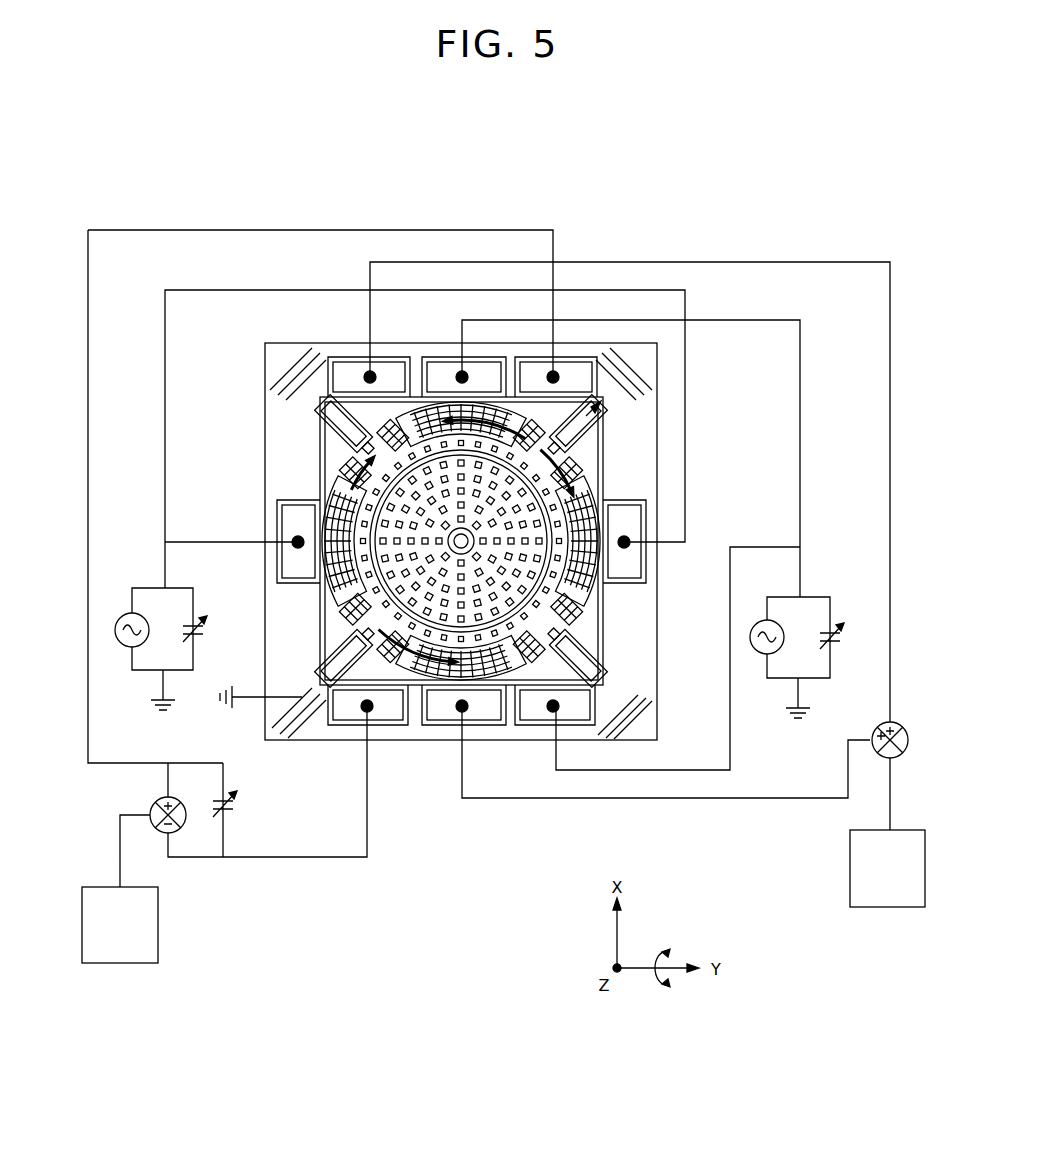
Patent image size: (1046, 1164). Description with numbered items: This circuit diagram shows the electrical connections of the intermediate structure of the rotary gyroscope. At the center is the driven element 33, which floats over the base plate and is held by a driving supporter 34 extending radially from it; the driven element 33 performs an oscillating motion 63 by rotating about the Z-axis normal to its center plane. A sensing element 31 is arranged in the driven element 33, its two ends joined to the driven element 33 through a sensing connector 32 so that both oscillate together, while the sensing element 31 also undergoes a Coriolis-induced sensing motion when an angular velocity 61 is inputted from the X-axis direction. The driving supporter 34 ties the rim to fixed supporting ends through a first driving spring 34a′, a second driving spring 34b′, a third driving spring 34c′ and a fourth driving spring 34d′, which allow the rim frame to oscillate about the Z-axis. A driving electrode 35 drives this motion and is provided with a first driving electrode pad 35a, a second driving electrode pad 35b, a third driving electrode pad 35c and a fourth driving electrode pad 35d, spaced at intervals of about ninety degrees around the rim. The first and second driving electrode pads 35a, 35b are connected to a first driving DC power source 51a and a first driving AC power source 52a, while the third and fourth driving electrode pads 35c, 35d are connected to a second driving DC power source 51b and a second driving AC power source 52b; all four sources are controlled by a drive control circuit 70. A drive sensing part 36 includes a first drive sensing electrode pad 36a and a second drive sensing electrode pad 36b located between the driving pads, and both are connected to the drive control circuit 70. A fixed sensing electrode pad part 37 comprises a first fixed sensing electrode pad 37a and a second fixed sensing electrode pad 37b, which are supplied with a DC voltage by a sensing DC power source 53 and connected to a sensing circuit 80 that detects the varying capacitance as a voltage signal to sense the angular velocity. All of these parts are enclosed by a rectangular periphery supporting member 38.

The sensing element 31 is at (560, 450).
The sensing connector 32 is at (620, 505).
The driven element 33 is at (633, 567).
The driving supporter 34 is at (594, 404).
The first driving spring 34a′ is at (328, 427).
The second driving spring 34b′ is at (587, 440).
The third driving spring 34c′ is at (330, 652).
The fourth driving spring 34d′ is at (605, 662).
The driving electrode 35 is at (433, 360).
The first driving electrode pad 35a is at (482, 375).
The second driving electrode pad 35b is at (433, 722).
The third driving electrode pad 35c is at (285, 518).
The fourth driving electrode pad 35d is at (630, 520).
The drive sensing part 36 is at (326, 377).
The first drive sensing electrode pad 36a is at (357, 374).
The second drive sensing electrode pad 36b is at (583, 705).
The fixed sensing electrode pad part 37 is at (537, 360).
The first fixed sensing electrode pad 37a is at (572, 378).
The second fixed sensing electrode pad 37b is at (340, 725).
The periphery supporting member 38 is at (650, 608).
The first driving DC power source 51a is at (849, 616).
The second driving DC power source 51b is at (212, 608).
The first driving AC power source 52a is at (782, 630).
The second driving AC power source 52b is at (144, 621).
The sensing DC power source 53 is at (230, 801).
The angular velocity 61 is at (575, 637).
The oscillating motion 63 is at (575, 362).
The drive control circuit 70 is at (850, 878).
The sensing circuit 80 is at (160, 928).